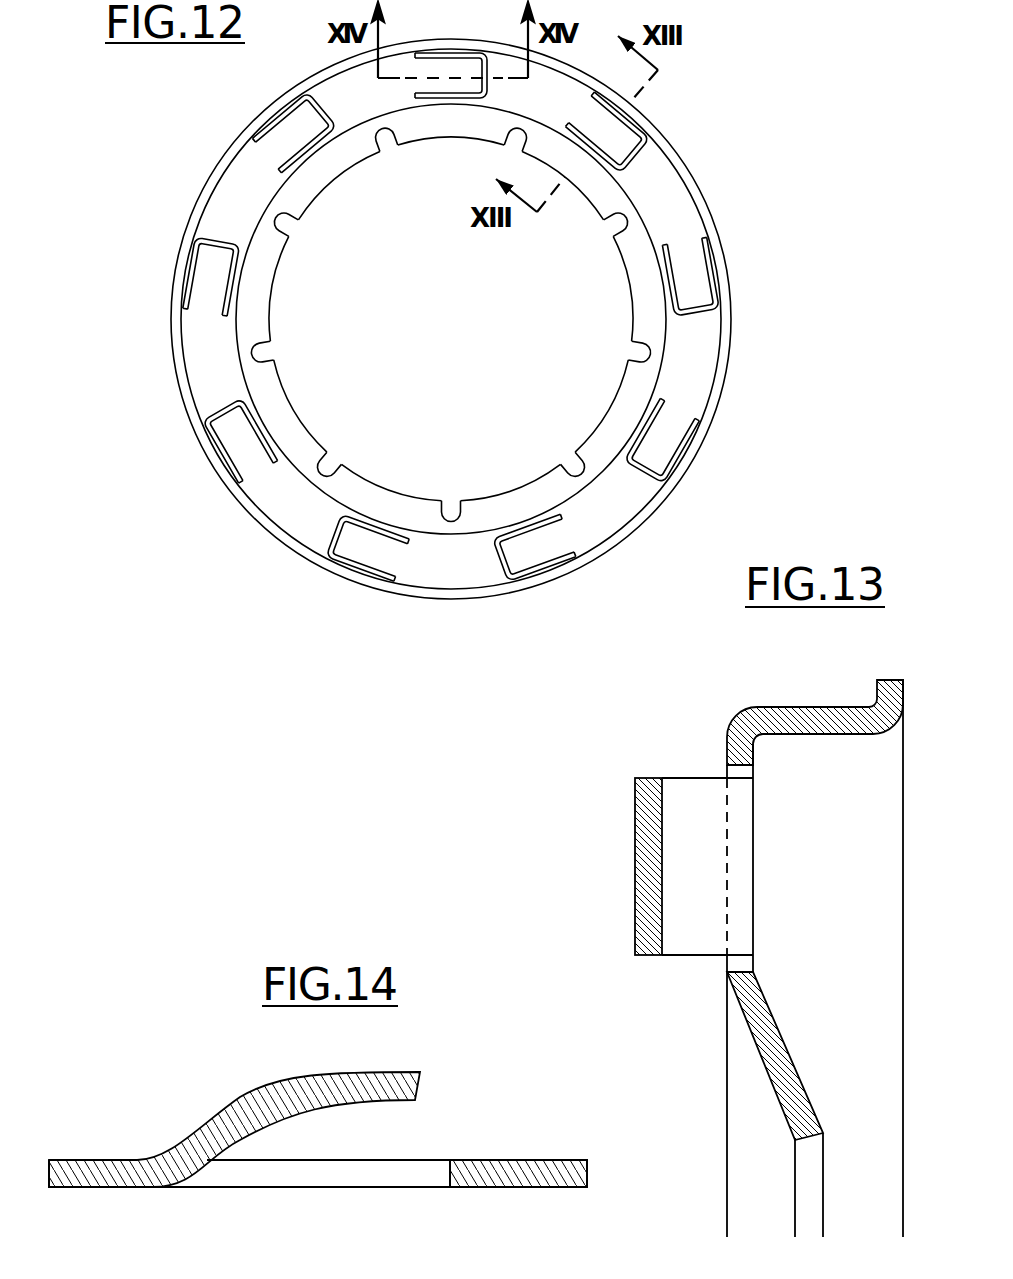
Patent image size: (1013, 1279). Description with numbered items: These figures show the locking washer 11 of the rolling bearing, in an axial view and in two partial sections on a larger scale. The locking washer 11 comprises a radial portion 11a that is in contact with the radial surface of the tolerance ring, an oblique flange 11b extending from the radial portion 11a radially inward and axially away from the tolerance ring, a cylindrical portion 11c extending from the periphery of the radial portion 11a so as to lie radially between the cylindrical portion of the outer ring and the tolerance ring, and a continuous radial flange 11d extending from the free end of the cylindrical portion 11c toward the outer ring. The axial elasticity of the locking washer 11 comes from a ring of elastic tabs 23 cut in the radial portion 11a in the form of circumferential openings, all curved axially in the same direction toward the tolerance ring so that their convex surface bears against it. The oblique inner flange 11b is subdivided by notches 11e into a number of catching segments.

In FIG. 12, the locking washer 11 is at (457, 319).
In FIG. 12, the radial portion 11a is at (208, 353).
In FIG. 13, the radial portion 11a is at (735, 748).
In FIG. 14, the radial portion 11a is at (512, 1178).
In FIG. 12, the oblique flange 11b is at (300, 187).
In FIG. 13, the oblique flange 11b is at (778, 1057).
In FIG. 13, the cylindrical portion 11c is at (760, 712).
In FIG. 12, the radial flange 11d is at (723, 328).
In FIG. 13, the radial flange 11d is at (887, 692).
In FIG. 12, the notches 11e is at (638, 352).
In FIG. 12, the elastic tabs 23 is at (690, 283).
In FIG. 13, the elastic tabs 23 is at (648, 826).
In FIG. 14, the elastic tabs 23 is at (262, 1112).